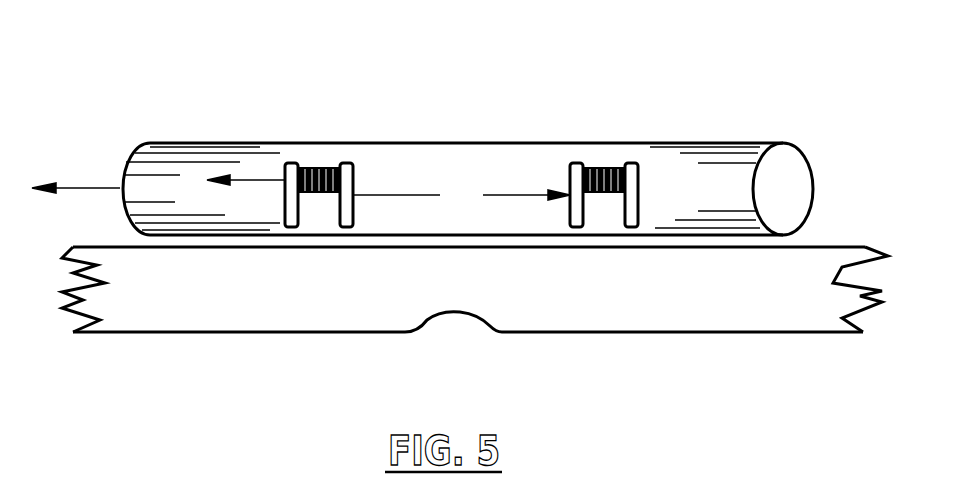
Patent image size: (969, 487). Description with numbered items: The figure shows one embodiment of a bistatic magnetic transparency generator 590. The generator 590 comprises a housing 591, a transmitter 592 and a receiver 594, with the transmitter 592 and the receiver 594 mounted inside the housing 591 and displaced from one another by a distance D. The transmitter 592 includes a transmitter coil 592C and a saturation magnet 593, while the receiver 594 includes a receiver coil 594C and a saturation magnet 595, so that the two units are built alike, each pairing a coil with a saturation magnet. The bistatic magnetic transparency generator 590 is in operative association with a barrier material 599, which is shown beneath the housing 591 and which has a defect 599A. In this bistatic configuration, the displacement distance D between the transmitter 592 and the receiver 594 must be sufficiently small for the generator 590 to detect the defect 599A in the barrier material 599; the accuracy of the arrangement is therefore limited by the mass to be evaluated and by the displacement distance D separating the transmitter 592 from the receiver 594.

The bistatic magnetic transparency generator 590 is at (422, 122).
The housing 591 is at (460, 143).
The transmitter 592 is at (285, 173).
The transmitter coil 592C is at (355, 213).
The saturation magnet 593 is at (320, 163).
The receiver 594 is at (643, 173).
The receiver coil 594C is at (570, 167).
The saturation magnet 595 is at (602, 163).
The barrier material 599 is at (682, 334).
The defect 599A is at (477, 318).